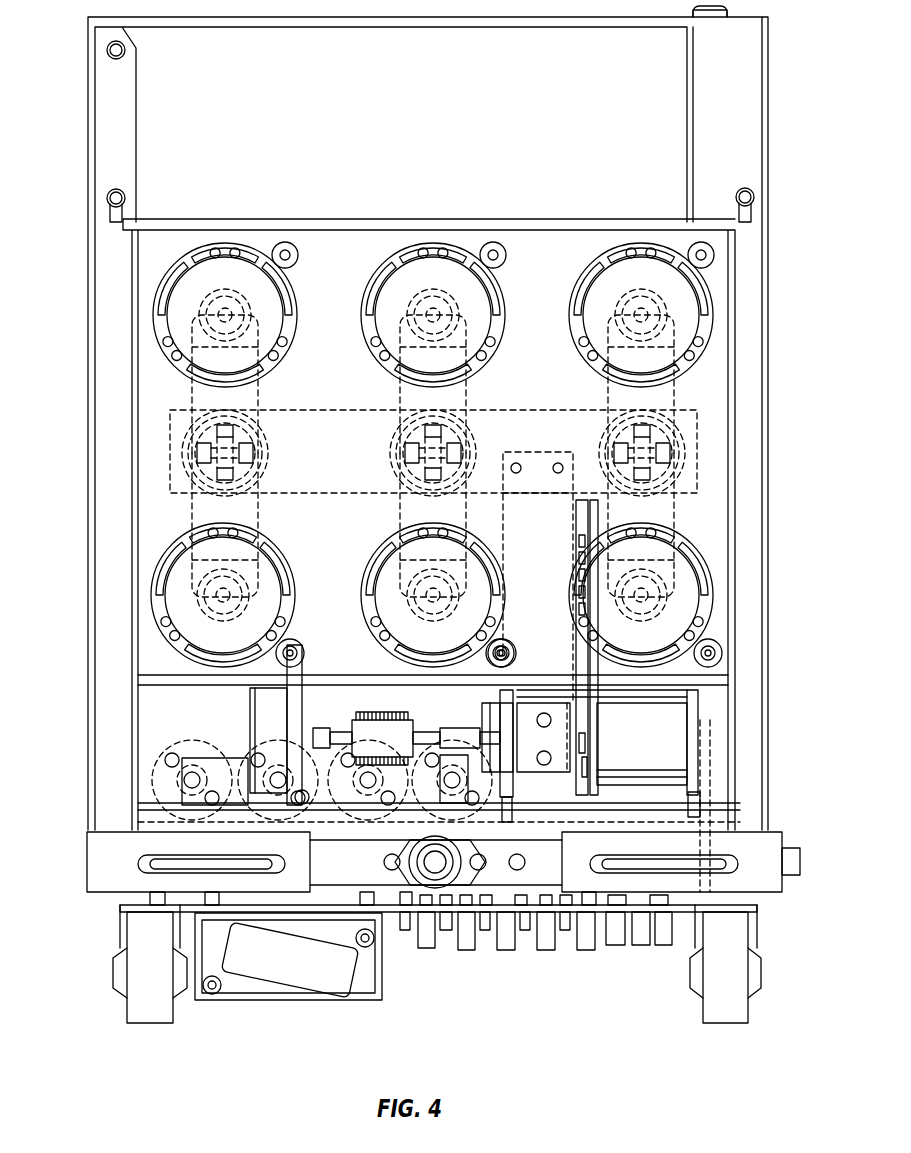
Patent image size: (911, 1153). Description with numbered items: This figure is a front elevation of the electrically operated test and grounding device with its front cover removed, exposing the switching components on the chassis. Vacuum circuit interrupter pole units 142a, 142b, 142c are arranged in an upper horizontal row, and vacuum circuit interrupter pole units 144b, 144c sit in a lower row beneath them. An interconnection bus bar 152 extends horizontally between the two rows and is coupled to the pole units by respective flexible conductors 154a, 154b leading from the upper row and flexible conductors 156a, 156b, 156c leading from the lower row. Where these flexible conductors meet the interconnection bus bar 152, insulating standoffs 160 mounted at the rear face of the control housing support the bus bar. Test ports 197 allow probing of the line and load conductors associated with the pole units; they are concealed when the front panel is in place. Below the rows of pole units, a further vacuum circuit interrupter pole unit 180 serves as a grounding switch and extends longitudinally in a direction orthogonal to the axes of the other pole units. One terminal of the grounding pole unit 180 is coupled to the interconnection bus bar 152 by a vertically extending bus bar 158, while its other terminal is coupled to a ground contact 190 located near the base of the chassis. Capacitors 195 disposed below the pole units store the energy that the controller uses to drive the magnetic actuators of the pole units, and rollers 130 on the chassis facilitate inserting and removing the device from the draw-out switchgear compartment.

The rollers 130 is at (735, 1006).
The vacuum circuit interrupter pole unit 142a is at (165, 262).
The vacuum circuit interrupter pole unit 142b is at (372, 300).
The vacuum circuit interrupter pole unit 142c is at (568, 305).
The vacuum circuit interrupter pole unit 144b is at (440, 668).
The vacuum circuit interrupter pole unit 144c is at (700, 632).
The interconnection bus bar 152 is at (296, 410).
The flexible conductor 154a is at (190, 398).
The flexible conductor 154b is at (466, 405).
The flexible conductor 156a is at (262, 508).
The flexible conductor 156b is at (468, 508).
The flexible conductor 156c is at (680, 508).
The vertically extending bus bar 158 is at (542, 452).
The insulating standoffs 160 is at (266, 445).
The grounding vacuum circuit interrupter pole unit 180 is at (660, 757).
The ground contact 190 is at (432, 950).
The capacitors 195 is at (165, 780).
The test ports 197 is at (508, 645).